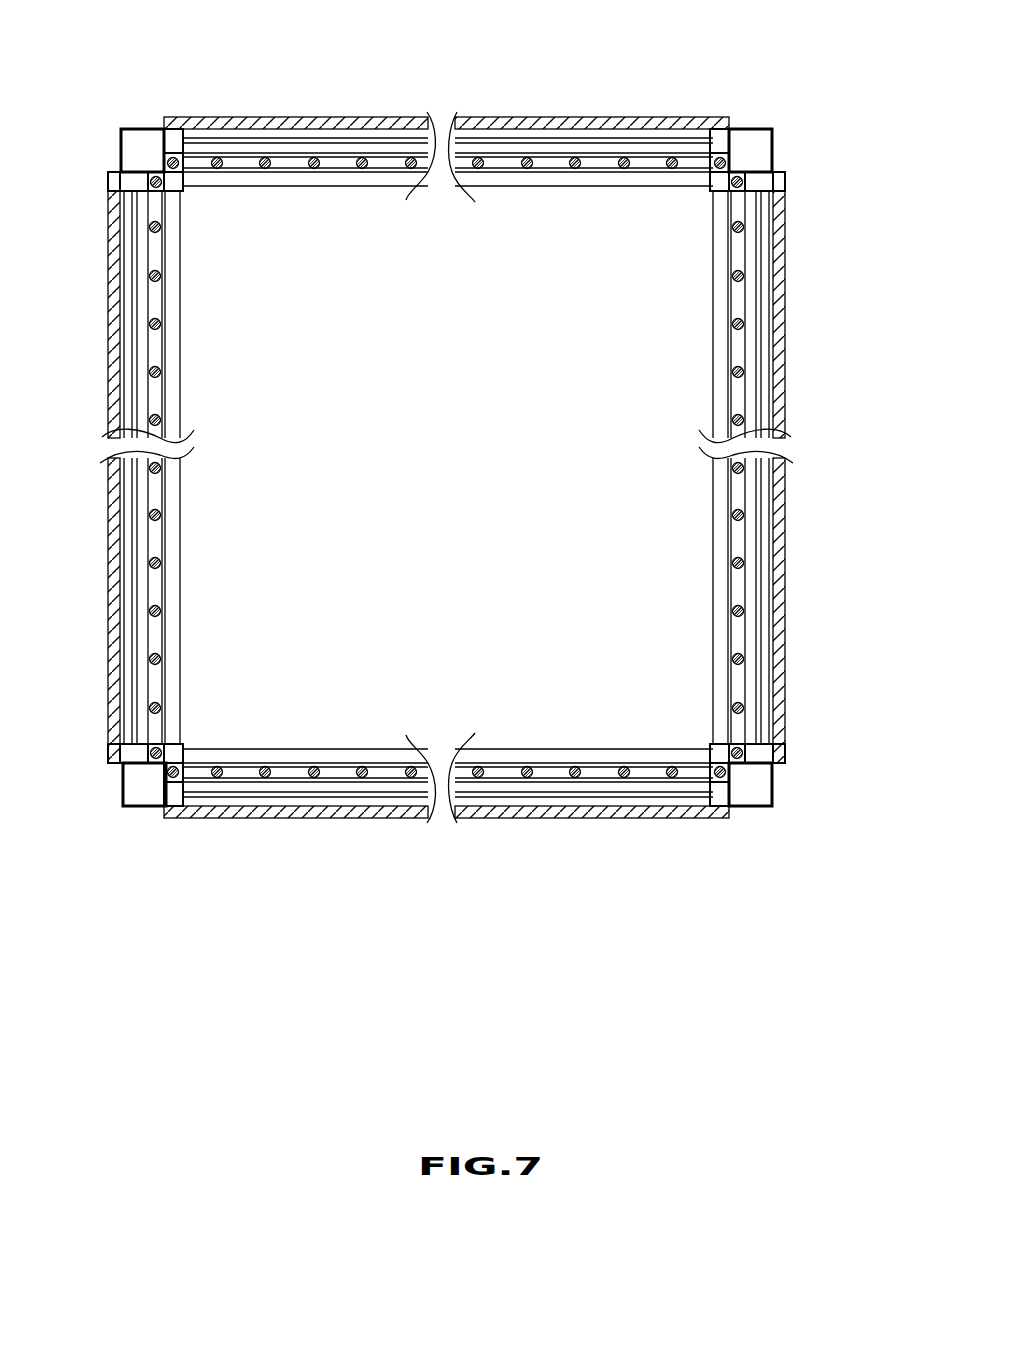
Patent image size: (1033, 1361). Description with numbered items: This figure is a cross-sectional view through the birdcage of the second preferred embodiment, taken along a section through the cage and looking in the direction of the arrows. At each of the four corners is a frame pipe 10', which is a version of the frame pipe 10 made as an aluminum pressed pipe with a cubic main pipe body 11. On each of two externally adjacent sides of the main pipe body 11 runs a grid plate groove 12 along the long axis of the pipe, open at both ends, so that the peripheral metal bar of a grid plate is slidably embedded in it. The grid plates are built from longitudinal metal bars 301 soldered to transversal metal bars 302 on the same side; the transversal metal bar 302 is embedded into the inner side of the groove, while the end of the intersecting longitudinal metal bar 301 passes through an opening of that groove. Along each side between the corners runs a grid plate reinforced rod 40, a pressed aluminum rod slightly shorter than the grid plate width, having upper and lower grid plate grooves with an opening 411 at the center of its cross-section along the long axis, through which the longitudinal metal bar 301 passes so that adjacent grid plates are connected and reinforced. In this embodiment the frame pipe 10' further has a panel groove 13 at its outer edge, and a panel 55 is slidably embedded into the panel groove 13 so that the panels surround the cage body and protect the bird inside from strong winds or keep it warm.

The frame pipe 10 is at (446, 467).
The frame pipe 10' is at (465, 452).
The main pipe body 11 is at (148, 128).
The grid plate groove 12 is at (205, 117).
The panel groove 13 is at (172, 117).
The panel 55 is at (622, 118).
The longitudinal metal bar 301 is at (492, 155).
The transversal metal bar 302 is at (550, 150).
The grid plate reinforced rod 40 is at (318, 184).
The opening 411 is at (397, 168).